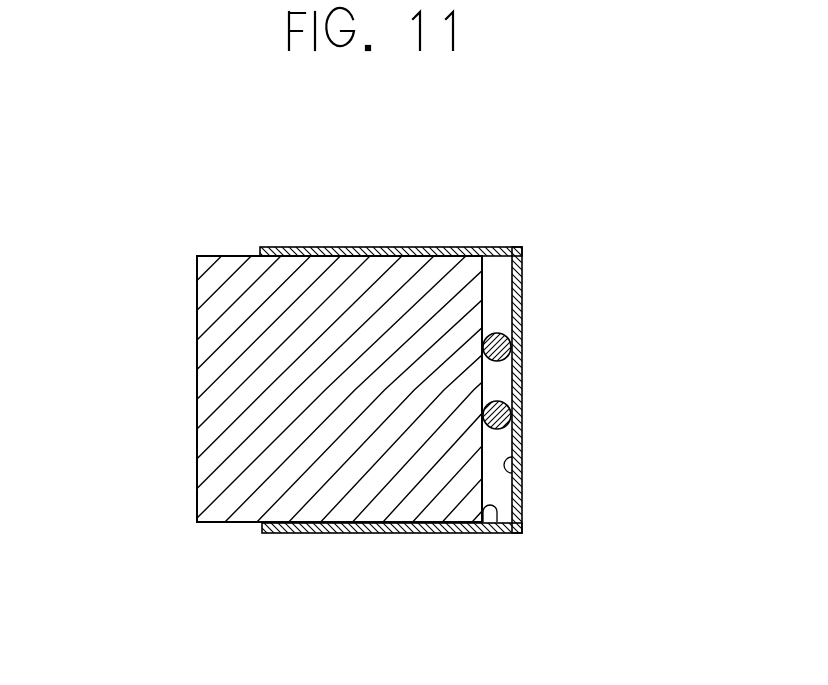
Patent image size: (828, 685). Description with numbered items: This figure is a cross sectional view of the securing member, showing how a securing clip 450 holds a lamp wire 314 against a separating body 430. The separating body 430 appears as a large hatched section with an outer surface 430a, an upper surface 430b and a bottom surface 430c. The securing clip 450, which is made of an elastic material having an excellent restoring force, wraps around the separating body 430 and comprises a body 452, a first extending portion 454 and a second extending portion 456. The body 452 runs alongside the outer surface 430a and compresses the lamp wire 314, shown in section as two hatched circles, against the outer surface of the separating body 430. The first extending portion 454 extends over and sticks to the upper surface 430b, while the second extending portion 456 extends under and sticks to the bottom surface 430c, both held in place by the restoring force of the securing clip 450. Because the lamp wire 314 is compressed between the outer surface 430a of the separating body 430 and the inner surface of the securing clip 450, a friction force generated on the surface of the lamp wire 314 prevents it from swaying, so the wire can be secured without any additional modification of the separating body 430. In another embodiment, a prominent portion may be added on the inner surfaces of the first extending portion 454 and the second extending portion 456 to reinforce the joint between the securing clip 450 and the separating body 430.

The separating body 430 is at (198, 447).
The outer surface 430a is at (488, 523).
The upper surface 430b is at (222, 255).
The bottom surface 430c is at (203, 523).
The first extending portion 454 is at (307, 247).
The second extending portion 456 is at (303, 533).
The securing clip 450 is at (522, 520).
The body 452 is at (512, 453).
The lamp wire 314 is at (512, 407).